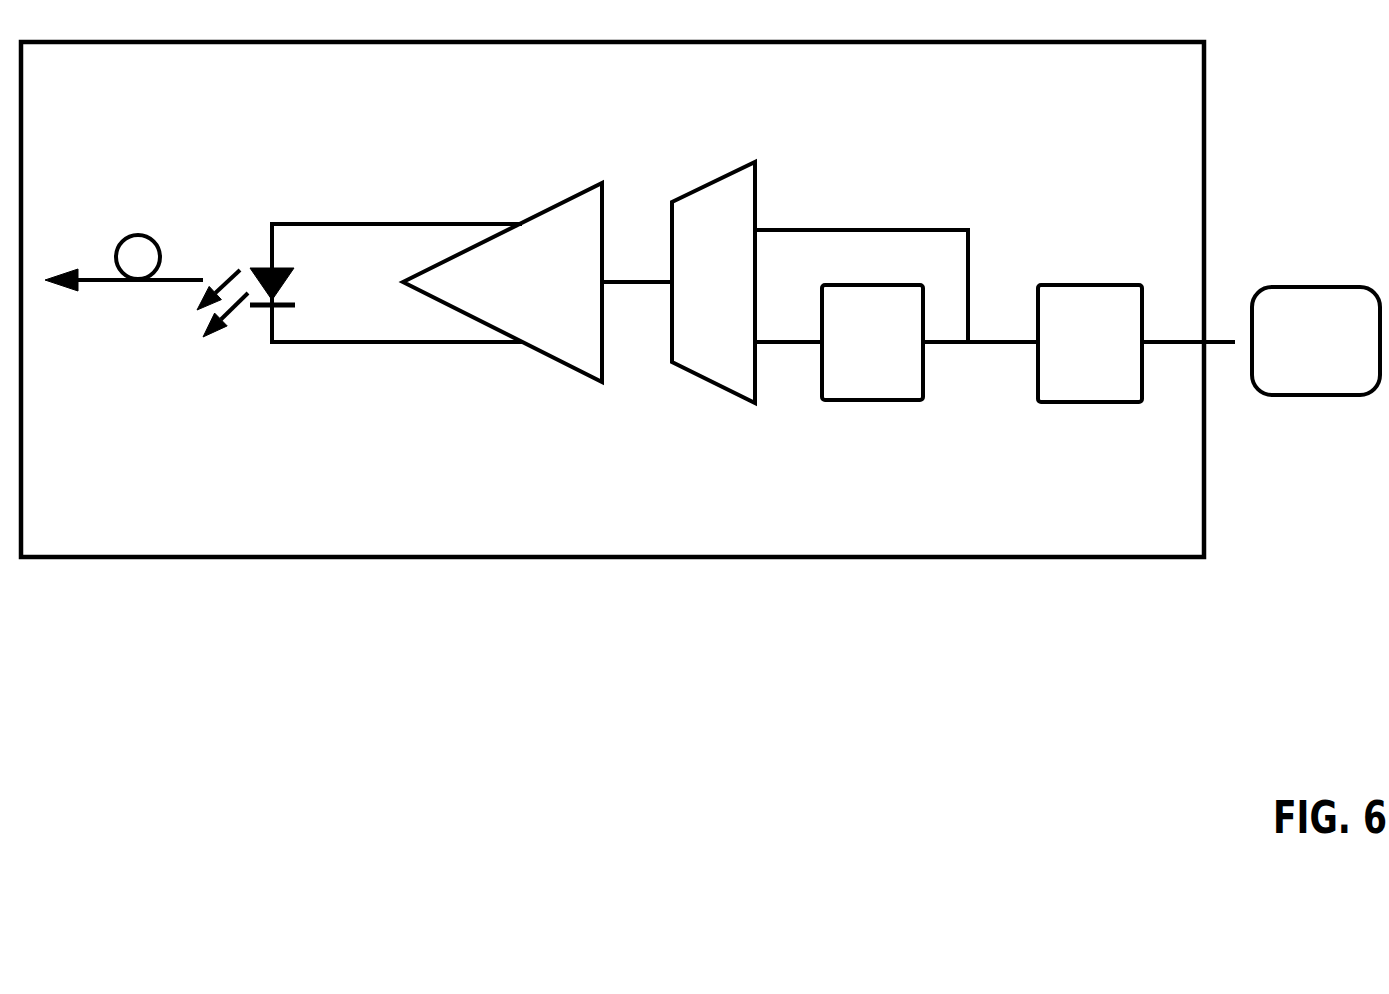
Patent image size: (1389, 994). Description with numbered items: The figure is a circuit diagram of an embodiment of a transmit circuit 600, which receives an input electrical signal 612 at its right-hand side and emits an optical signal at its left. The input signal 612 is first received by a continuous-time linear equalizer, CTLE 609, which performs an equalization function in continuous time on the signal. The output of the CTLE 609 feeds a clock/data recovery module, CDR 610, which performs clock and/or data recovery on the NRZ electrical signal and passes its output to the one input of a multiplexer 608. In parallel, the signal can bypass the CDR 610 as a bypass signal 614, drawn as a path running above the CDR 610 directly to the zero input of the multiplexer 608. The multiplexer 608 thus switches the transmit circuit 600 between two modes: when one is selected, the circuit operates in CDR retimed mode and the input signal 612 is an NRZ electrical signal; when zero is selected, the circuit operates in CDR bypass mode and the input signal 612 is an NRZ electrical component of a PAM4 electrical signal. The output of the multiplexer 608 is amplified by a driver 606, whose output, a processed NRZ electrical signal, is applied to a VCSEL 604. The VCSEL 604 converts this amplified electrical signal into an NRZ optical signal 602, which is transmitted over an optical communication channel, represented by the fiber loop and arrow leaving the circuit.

The transmit circuit 600 is at (1120, 537).
The NRZ optical signal 602 is at (132, 236).
The VCSEL 604 is at (283, 292).
The driver 606 is at (515, 307).
The multiplexer 608 is at (758, 186).
The continuous-time linear equalizer (CTLE) 609 is at (1068, 371).
The clock/data recovery module (CDR) 610 is at (893, 369).
The input signal 612 is at (1295, 382).
The bypass signal 614 is at (883, 228).